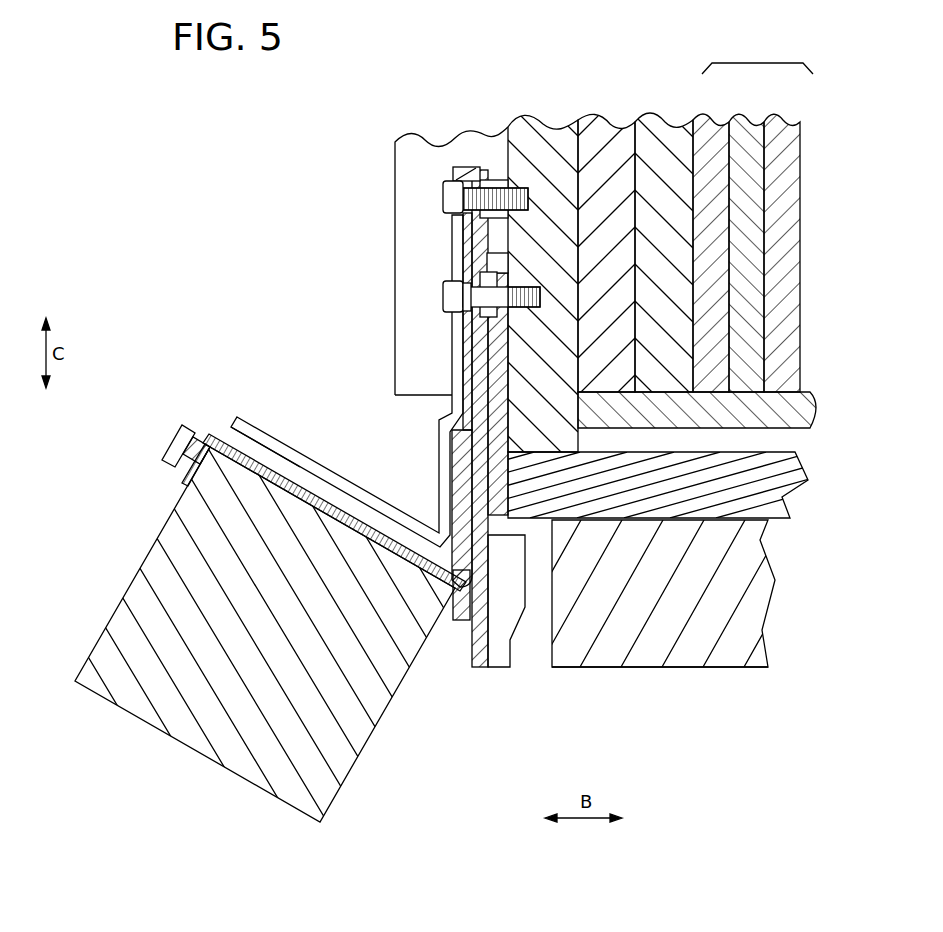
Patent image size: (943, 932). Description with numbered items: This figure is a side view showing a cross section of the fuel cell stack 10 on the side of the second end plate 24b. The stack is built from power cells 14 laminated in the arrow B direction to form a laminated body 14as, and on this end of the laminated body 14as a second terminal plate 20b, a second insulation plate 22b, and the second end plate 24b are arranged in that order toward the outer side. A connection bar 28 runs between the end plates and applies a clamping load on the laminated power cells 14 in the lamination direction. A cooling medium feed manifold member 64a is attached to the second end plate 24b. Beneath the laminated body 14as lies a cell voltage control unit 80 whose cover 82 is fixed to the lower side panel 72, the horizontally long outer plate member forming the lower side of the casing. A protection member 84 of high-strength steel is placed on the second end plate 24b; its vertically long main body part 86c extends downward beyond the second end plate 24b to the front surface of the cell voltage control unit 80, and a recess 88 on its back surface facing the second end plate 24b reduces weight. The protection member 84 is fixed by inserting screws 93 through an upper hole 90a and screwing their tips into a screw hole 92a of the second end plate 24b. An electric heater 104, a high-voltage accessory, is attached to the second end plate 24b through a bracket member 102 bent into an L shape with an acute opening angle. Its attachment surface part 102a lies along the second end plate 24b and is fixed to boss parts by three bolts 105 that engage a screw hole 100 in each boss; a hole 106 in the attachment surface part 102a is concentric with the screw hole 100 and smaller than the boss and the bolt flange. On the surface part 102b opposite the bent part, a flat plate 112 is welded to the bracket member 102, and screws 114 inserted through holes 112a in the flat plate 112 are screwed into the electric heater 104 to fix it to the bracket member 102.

The fuel cell stack 10 is at (240, 100).
The power cells 14 is at (707, 121).
The laminated body 14as is at (757, 56).
The second terminal plate 20b is at (659, 121).
The second insulation plate 22b is at (597, 121).
The second end plate 24b is at (544, 113).
The connection bar 28 is at (809, 395).
The cooling medium feed manifold member 64a is at (392, 151).
The lower side panel 72 is at (793, 492).
The cell voltage control unit 80 is at (723, 676).
The cover 82 is at (637, 670).
The protection member 84 is at (452, 383).
The main body part 86c is at (470, 655).
The recess 88 is at (499, 648).
The upper hole 90a is at (487, 262).
The screw hole 92a is at (522, 302).
The screws 93 is at (447, 293).
The screw hole 100 is at (500, 185).
The bracket member 102 is at (374, 484).
The attachment surface part 102a is at (488, 276).
The surface part 102b is at (268, 427).
The electric heater 104 is at (148, 537).
The bolts 105 is at (445, 197).
The hole 106 is at (462, 172).
The flat plate 112 is at (303, 492).
The holes 112a is at (200, 440).
The screws 114 is at (172, 438).